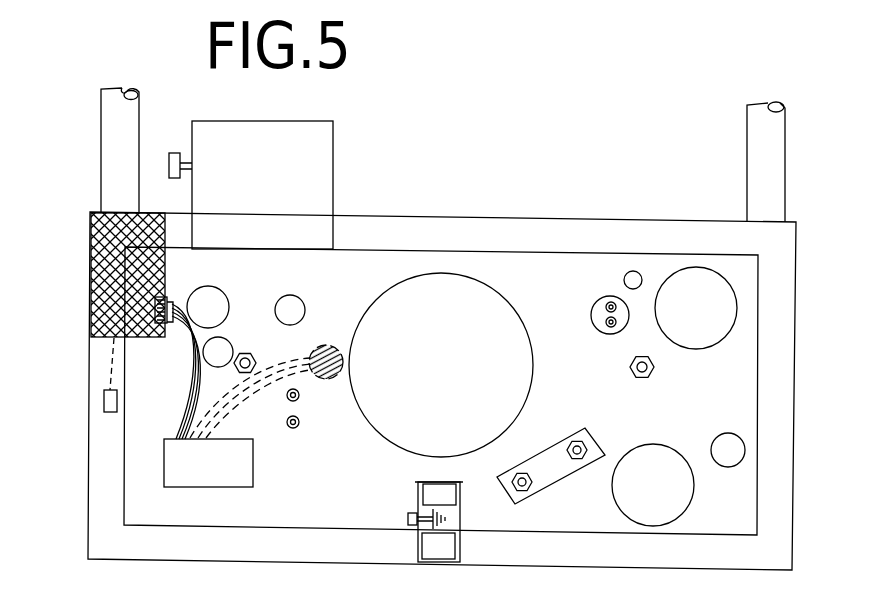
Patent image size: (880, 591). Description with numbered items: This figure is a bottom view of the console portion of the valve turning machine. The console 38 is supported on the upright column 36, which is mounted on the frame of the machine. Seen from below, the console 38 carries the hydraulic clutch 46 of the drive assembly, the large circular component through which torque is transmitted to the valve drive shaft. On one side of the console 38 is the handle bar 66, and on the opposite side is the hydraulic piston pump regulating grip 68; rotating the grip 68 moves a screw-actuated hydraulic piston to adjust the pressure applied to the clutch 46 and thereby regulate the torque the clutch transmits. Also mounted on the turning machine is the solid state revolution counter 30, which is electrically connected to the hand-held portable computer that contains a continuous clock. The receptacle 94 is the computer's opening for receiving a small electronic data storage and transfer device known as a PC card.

The solid state revolution counter 30 is at (243, 464).
The upright column 36 is at (468, 550).
The console 38 is at (80, 507).
The hydraulic clutch 46 is at (520, 294).
The handle bar 66 is at (115, 124).
The hydraulic piston pump regulating grip 68 is at (762, 143).
The receptacle 94 is at (452, 419).